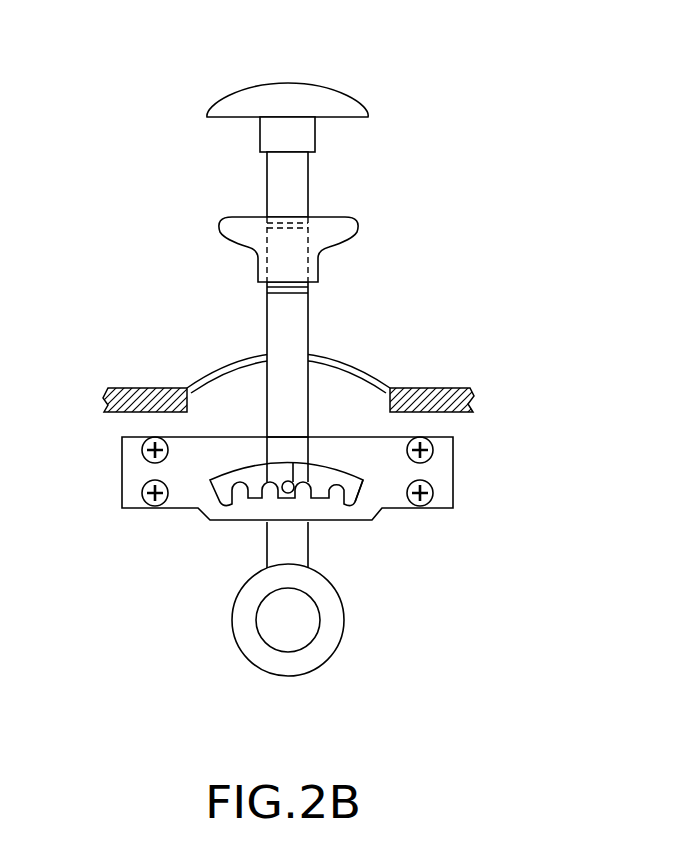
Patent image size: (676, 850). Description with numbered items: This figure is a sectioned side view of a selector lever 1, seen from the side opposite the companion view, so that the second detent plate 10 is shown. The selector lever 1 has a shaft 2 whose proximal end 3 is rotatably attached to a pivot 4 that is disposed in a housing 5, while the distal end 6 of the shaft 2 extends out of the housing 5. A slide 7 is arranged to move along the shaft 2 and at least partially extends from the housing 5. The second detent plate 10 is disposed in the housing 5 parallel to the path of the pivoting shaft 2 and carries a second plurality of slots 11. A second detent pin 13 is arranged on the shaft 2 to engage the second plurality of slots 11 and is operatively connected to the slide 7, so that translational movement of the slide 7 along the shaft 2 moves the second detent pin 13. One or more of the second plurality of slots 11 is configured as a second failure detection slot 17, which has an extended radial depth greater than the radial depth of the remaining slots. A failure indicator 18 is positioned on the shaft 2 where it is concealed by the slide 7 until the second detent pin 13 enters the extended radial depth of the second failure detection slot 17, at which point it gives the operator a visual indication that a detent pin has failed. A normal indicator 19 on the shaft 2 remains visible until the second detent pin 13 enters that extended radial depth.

The selector lever 1 is at (125, 188).
The shaft 2 is at (302, 322).
The proximal end 3 is at (308, 563).
The pivot 4 is at (283, 627).
The housing 5 is at (460, 388).
The distal end 6 is at (340, 88).
The slide 7 is at (280, 227).
The second detent plate 10 is at (443, 470).
The second plurality of slots 11 is at (220, 503).
The second detent pin 13 is at (284, 483).
The second failure detection slot 17 is at (358, 493).
The failure indicator 18 is at (312, 228).
The normal indicator 19 is at (303, 290).